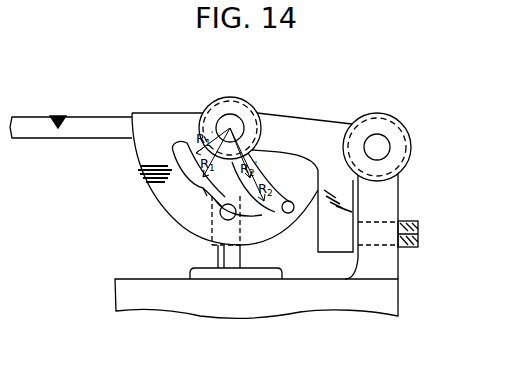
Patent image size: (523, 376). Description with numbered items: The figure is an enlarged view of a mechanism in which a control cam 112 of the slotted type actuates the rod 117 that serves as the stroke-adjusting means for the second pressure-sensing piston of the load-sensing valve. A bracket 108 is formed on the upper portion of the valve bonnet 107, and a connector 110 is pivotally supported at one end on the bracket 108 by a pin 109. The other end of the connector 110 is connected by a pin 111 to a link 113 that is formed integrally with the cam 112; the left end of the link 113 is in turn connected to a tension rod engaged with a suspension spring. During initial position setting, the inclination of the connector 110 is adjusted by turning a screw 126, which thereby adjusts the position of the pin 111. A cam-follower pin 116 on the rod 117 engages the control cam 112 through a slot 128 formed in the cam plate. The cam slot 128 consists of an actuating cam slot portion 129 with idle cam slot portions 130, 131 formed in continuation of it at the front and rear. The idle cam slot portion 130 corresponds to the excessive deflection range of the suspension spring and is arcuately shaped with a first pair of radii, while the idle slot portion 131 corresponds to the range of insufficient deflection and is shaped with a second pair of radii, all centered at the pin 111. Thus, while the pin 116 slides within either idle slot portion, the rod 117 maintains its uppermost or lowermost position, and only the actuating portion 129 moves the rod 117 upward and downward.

The valve bonnet 107 is at (124, 290).
The bracket 108 is at (392, 215).
The pin 109 is at (383, 153).
The connector 110 is at (305, 133).
The pin 111 is at (237, 125).
The control cam 112 is at (142, 180).
The link 113 is at (57, 116).
The pin 116 is at (213, 196).
The rod 117 is at (236, 260).
The screw 126 is at (416, 243).
The cam slot 128 is at (172, 145).
The actuating cam slot portion 129 is at (215, 204).
The idle cam slot portion 130 is at (282, 208).
The idle cam slot portion 131 is at (172, 152).